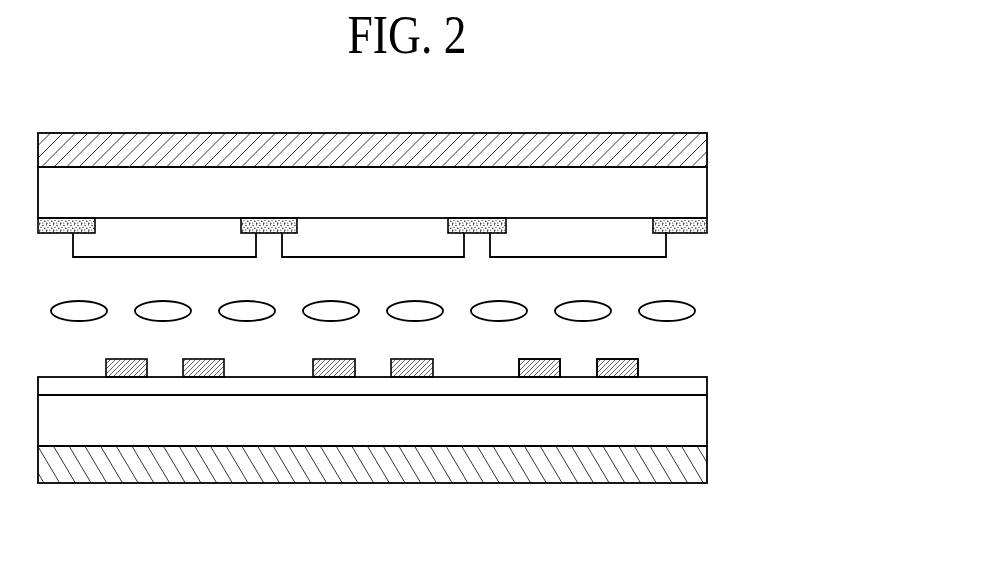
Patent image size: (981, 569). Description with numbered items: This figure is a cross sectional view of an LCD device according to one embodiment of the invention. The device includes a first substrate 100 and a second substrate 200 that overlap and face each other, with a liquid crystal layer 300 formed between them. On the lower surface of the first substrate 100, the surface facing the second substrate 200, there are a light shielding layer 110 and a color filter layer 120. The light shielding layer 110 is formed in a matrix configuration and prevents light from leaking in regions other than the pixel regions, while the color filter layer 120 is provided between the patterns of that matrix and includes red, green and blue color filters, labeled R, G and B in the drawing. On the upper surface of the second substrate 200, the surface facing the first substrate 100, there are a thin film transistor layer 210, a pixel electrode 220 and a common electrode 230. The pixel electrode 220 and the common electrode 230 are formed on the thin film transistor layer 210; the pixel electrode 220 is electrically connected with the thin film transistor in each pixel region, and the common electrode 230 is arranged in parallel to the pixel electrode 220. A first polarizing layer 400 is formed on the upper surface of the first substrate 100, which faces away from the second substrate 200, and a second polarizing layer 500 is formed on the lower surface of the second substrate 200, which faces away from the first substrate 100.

The first polarizing layer 400 is at (707, 150).
The first substrate 100 is at (707, 195).
The light shielding layer 110 is at (707, 227).
The color filter layer 120 is at (652, 248).
The liquid crystal layer 300 is at (672, 302).
The thin film transistor layer 210 is at (707, 387).
The pixel electrode 220 is at (538, 366).
The common electrode 230 is at (618, 366).
The second substrate 200 is at (707, 420).
The second polarizing layer 500 is at (707, 460).